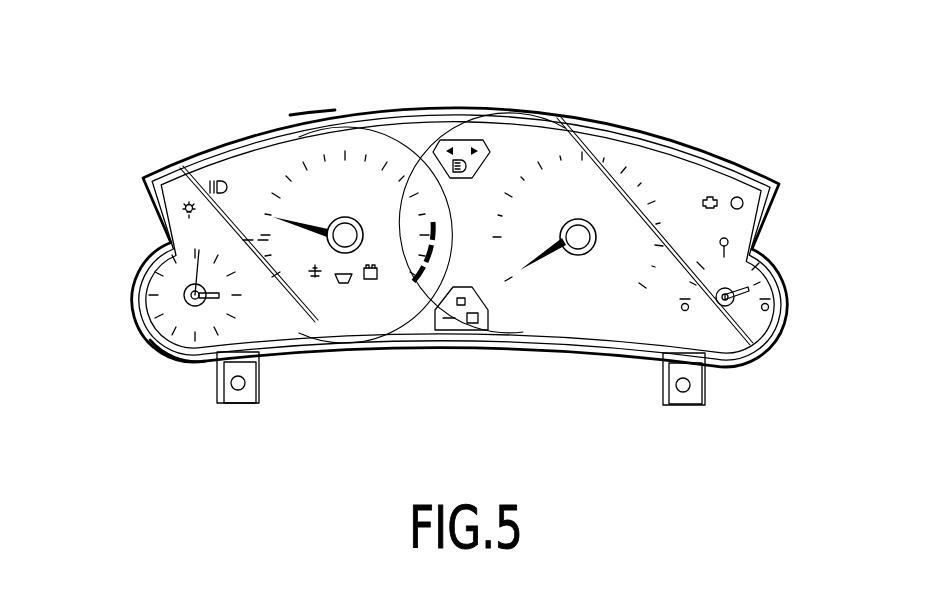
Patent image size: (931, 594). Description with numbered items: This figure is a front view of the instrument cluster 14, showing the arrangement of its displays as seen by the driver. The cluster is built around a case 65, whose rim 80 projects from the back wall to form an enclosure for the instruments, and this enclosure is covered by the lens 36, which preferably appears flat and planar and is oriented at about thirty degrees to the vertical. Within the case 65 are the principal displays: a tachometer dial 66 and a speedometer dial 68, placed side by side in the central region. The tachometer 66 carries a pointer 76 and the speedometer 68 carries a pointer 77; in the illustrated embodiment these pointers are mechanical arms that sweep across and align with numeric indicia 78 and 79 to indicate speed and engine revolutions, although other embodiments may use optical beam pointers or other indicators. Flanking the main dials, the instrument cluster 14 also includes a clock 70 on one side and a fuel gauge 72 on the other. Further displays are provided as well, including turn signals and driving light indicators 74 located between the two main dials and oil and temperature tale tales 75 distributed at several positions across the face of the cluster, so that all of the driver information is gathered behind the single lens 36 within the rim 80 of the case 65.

The instrument cluster 14 is at (678, 108).
The lens 36 is at (606, 148).
The case 65 is at (311, 100).
The tachometer dial 66 is at (321, 243).
The speedometer dial 68 is at (542, 247).
The clock 70 is at (168, 285).
The fuel gauge 72 is at (743, 306).
The turn signals and driving light indicators 74 is at (459, 138).
The oil and temperature tale tales 75 is at (185, 193).
The pointer 76 is at (289, 229).
The pointer 77 is at (547, 260).
The numeric indicia 78 is at (663, 310).
The numeric indicia 79 is at (293, 146).
The rim 80 is at (168, 362).